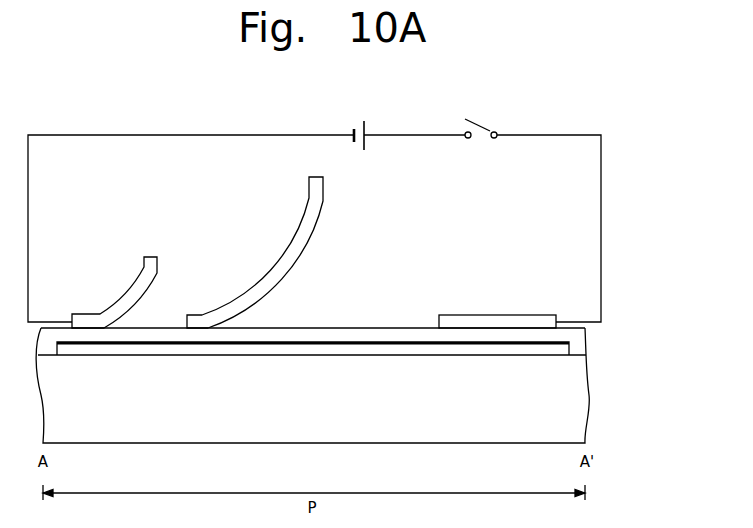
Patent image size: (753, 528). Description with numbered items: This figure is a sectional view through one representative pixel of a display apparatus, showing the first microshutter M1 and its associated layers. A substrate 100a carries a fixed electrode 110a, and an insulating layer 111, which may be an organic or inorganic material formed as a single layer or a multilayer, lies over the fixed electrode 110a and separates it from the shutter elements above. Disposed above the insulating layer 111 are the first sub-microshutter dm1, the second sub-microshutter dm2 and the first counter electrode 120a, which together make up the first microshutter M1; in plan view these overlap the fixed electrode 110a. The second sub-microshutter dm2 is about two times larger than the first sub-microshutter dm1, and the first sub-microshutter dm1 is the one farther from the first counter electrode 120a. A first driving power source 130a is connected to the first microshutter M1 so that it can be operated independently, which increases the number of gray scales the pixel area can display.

The first driving power source 130a is at (601, 200).
The first counter electrode 120a is at (515, 322).
The insulating layer 111 is at (577, 334).
The fixed electrode 110a is at (562, 350).
The substrate 100a is at (578, 408).
The first microshutter M1 is at (268, 208).
The first sub-microshutter dm1 is at (150, 256).
The second sub-microshutter dm2 is at (308, 232).